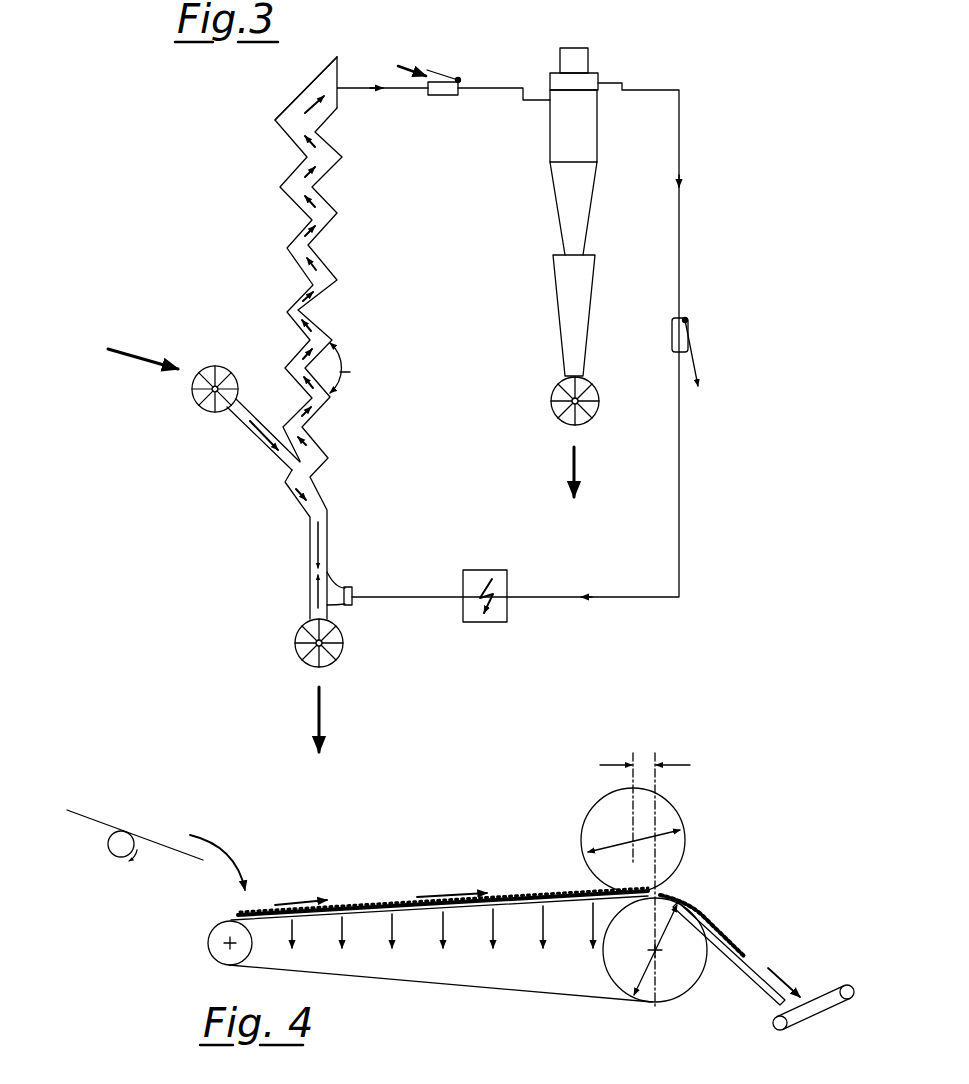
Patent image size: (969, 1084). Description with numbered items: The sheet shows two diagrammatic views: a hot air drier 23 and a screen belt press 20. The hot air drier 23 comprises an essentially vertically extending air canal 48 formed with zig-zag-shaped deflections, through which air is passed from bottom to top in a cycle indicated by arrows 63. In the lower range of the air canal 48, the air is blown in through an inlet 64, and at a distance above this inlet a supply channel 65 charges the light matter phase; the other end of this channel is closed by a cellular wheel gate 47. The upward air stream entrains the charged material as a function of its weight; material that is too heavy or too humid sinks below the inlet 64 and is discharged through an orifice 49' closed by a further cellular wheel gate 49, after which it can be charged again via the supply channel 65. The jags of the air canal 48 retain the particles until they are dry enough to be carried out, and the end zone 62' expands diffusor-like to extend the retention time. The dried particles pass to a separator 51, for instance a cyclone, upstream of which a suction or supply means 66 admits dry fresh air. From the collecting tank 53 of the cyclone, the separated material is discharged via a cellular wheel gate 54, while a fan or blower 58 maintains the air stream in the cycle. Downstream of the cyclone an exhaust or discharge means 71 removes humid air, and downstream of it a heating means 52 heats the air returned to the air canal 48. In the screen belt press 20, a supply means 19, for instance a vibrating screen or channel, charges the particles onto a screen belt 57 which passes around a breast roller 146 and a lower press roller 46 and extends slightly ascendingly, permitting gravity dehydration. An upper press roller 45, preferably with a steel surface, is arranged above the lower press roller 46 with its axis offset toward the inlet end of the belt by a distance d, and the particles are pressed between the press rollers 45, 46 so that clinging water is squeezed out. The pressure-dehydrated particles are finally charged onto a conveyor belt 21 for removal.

In FIG. 4, the supply means 19 is at (157, 840).
In FIG. 4, the screen belt press 20 is at (442, 890).
In FIG. 4, the conveyor belt 21 is at (817, 995).
In FIG. 3, the hot air drier 23 is at (283, 245).
In FIG. 4, the upper press roller 45 is at (670, 817).
In FIG. 4, the lower press roller 46 is at (680, 987).
In FIG. 3, the cellular wheel gate 47 is at (213, 373).
In FIG. 3, the air canal 48 is at (333, 270).
In FIG. 3, the cellular wheel gate 49 is at (351, 656).
In FIG. 3, the orifice 49' is at (283, 569).
In FIG. 3, the separator 51 is at (587, 178).
In FIG. 3, the heating means 52 is at (475, 625).
In FIG. 3, the collecting tank 53 is at (567, 283).
In FIG. 3, the cellular wheel gate 54 is at (592, 409).
In FIG. 4, the screen belt 57 is at (430, 910).
In FIG. 3, the fan or blower 58 is at (557, 83).
In FIG. 3, the end zone 62' is at (270, 88).
In FIG. 3, the arrows 63 is at (318, 203).
In FIG. 3, the inlet 64 is at (341, 583).
In FIG. 3, the supply channel 65 is at (282, 467).
In FIG. 3, the suction or supply means 66 is at (458, 80).
In FIG. 3, the exhaust or discharge means 71 is at (685, 320).
In FIG. 4, the breast roller 146 is at (207, 939).